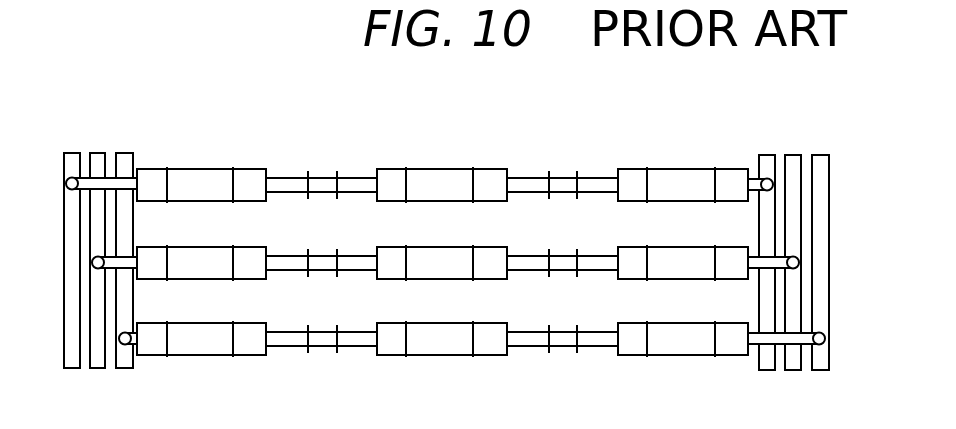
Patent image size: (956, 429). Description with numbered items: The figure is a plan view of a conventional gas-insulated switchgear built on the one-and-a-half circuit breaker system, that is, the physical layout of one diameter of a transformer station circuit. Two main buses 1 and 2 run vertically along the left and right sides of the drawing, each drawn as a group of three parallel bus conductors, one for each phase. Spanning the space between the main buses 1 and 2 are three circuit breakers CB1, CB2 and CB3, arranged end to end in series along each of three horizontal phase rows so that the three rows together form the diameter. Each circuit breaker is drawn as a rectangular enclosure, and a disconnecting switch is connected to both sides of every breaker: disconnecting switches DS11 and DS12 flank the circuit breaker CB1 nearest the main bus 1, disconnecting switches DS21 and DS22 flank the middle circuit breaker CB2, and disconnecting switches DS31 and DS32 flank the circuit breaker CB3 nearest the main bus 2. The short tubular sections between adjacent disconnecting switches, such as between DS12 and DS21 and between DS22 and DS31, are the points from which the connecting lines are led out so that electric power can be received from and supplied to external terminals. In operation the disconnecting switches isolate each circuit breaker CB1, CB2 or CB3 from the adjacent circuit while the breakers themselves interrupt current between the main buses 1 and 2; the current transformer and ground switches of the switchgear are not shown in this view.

The main bus 1 is at (75, 152).
The main bus 2 is at (770, 155).
The disconnecting switch DS11 is at (163, 170).
The disconnecting switch DS12 is at (260, 170).
The disconnecting switch DS21 is at (395, 170).
The disconnecting switch DS22 is at (493, 170).
The disconnecting switch DS31 is at (632, 170).
The disconnecting switch DS32 is at (730, 170).
The circuit breaker CB1 is at (207, 202).
The circuit breaker CB2 is at (438, 202).
The circuit breaker CB3 is at (673, 202).